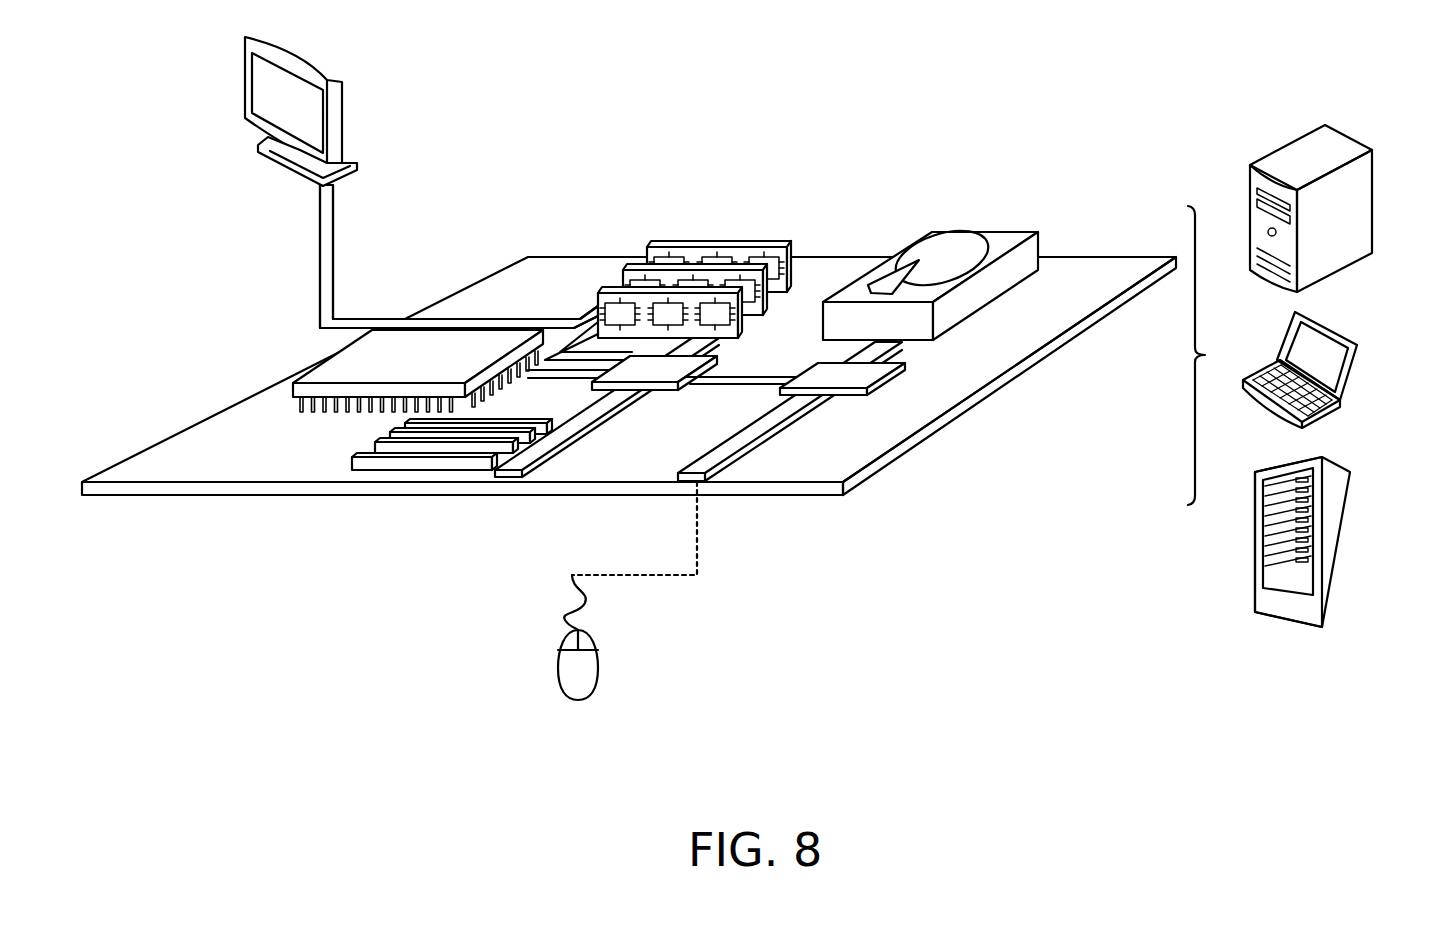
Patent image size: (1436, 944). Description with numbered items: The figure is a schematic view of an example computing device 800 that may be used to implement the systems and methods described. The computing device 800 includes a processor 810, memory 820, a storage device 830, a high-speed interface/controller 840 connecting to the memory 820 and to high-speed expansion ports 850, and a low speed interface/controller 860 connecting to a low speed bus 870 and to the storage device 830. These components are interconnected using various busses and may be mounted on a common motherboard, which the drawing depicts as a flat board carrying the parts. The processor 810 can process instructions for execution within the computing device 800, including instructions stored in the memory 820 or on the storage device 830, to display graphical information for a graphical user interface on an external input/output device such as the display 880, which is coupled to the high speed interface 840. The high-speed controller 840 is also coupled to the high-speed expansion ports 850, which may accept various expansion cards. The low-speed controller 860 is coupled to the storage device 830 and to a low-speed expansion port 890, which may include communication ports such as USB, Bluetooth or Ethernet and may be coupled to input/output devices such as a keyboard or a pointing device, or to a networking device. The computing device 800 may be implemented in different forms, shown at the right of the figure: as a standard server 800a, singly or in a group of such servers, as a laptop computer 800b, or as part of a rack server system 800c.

The computing device 800 is at (797, 105).
The standard server 800a is at (1280, 146).
The laptop computer 800b is at (1337, 333).
The rack server system 800c is at (1345, 520).
The processor 810 is at (295, 383).
The memory 820 is at (715, 248).
The storage device 830 is at (980, 232).
The high-speed interface/controller 840 is at (660, 391).
The high-speed expansion ports 850 is at (352, 462).
The low speed interface/controller 860 is at (832, 372).
The low speed bus 870 is at (780, 432).
The display 880 is at (243, 90).
The low-speed expansion port 890 is at (712, 483).